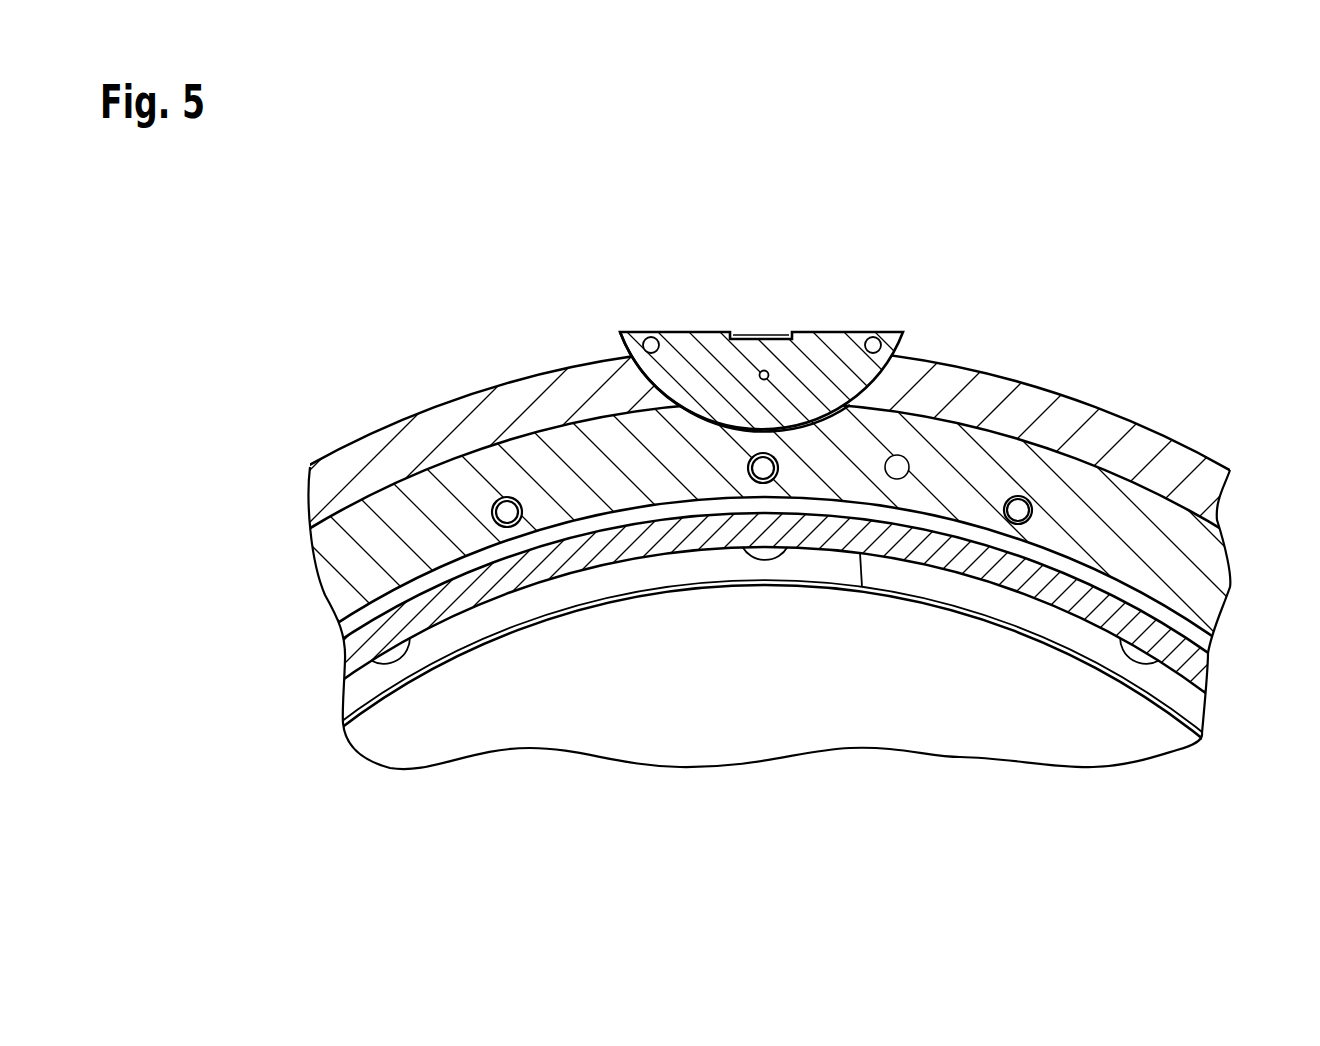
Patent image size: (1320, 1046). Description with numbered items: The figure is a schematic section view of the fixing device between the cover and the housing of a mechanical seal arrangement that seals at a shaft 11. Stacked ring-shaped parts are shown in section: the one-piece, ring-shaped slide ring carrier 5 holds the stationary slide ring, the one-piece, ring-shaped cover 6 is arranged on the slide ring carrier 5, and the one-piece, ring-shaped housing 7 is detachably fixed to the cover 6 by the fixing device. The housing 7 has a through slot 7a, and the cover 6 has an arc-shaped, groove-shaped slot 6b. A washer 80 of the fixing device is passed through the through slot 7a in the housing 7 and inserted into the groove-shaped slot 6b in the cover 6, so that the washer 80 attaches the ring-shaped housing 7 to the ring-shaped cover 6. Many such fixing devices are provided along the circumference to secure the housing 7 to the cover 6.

The slide ring carrier 5 is at (1193, 658).
The cover 6 is at (1200, 587).
The groove-shaped slot 6b is at (781, 417).
The housing 7 is at (1072, 412).
The through slot 7a is at (653, 380).
The shaft 11 is at (1113, 722).
The washer 80 is at (847, 356).